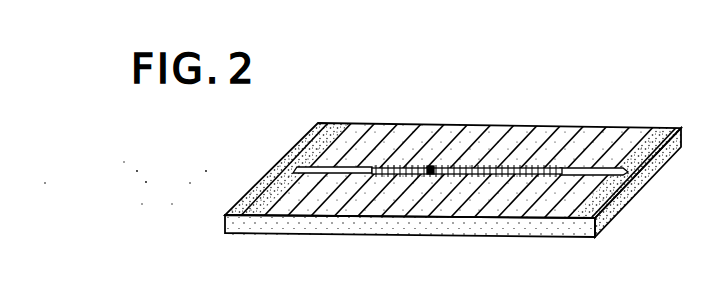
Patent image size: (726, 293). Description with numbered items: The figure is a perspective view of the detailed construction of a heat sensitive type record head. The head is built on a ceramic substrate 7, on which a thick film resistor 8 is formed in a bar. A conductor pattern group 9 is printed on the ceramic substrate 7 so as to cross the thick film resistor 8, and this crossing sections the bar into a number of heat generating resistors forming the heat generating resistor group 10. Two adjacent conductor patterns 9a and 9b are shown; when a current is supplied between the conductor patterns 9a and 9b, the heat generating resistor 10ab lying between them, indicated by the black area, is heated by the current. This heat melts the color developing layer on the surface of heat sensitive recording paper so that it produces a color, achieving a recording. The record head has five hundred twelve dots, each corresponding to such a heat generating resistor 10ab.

The ceramic substrate 7 is at (663, 130).
The thick film resistor 8 is at (293, 167).
The conductor pattern group 9 is at (337, 124).
The conductor pattern 9a is at (371, 207).
The conductor pattern 9b is at (517, 133).
The heat generating resistor group 10 is at (386, 126).
The heat generating resistor 10ab is at (431, 167).